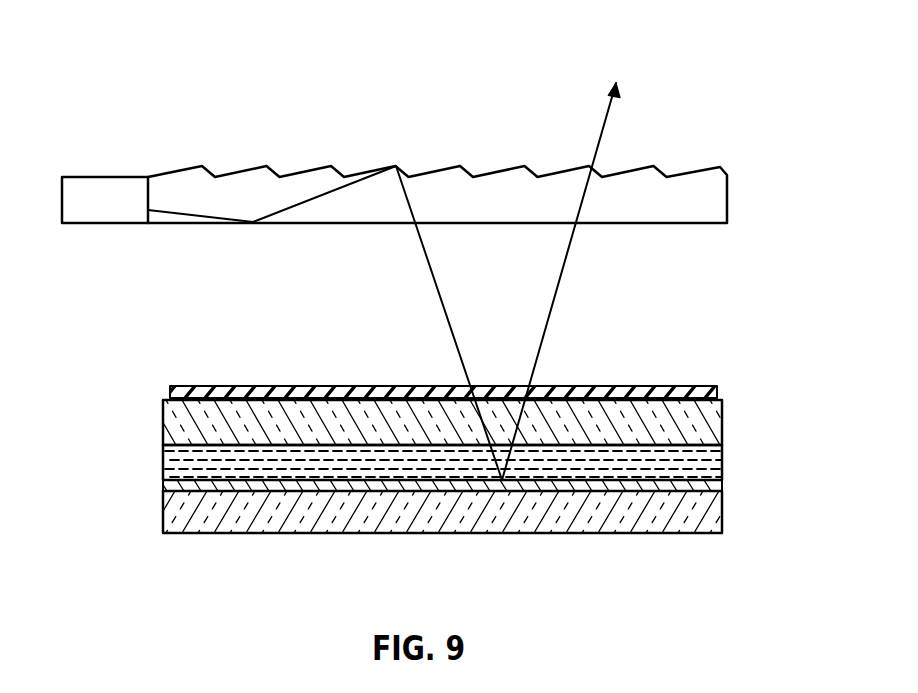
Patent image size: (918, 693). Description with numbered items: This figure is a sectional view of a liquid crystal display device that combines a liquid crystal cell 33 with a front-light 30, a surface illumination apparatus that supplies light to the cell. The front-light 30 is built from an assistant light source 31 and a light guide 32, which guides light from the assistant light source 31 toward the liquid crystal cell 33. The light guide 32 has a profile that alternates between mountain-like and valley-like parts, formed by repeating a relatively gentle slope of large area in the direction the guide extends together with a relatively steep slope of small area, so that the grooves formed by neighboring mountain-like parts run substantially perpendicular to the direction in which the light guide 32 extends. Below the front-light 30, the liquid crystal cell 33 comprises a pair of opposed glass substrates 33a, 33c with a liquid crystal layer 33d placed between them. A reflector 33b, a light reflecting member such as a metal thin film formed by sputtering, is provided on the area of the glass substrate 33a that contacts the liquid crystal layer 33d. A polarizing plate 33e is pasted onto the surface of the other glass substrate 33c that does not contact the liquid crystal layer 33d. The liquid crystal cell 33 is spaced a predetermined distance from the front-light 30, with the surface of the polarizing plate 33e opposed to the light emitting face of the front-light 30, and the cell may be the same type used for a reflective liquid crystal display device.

The front-light 30 is at (367, 98).
The assistant light source 31 is at (100, 190).
The light guide 32 is at (517, 182).
The liquid crystal cell 33 is at (735, 385).
The glass substrate 33a is at (658, 527).
The reflector 33b is at (597, 483).
The glass substrate 33c is at (580, 408).
The liquid crystal layer 33d is at (657, 453).
The polarizing plate 33e is at (310, 395).